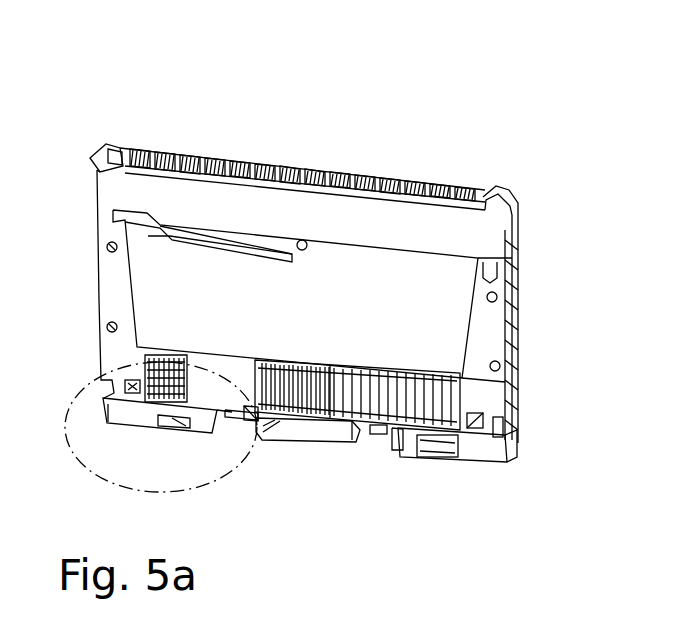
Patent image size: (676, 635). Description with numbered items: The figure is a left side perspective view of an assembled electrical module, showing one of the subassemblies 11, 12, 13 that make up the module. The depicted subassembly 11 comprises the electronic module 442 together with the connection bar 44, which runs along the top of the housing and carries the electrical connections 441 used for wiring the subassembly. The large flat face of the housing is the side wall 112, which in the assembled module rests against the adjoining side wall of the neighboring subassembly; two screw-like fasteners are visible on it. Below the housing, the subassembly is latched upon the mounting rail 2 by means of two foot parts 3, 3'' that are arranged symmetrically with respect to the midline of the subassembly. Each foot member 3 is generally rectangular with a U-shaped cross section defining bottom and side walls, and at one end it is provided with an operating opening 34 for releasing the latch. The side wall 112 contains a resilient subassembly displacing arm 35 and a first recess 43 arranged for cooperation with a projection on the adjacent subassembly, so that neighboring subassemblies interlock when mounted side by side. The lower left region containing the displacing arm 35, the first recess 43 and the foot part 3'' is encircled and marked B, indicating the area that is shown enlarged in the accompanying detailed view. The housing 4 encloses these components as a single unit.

The subassembly 11 is at (311, 266).
The subassembly 12 is at (311, 266).
The subassembly 13 is at (165, 86).
The side wall 112 is at (116, 297).
The connection bar 44 is at (386, 230).
The electrical connections 441 is at (301, 163).
The electronic module 442 is at (396, 284).
The housing 4 is at (476, 340).
The first recess 43 is at (480, 413).
The operating opening 34 is at (504, 428).
The foot member 3 is at (457, 479).
The mounting rail 2 is at (317, 441).
The displacement arm 35 is at (184, 424).
The foot part 3'' is at (169, 447).
The detail region B is at (85, 385).